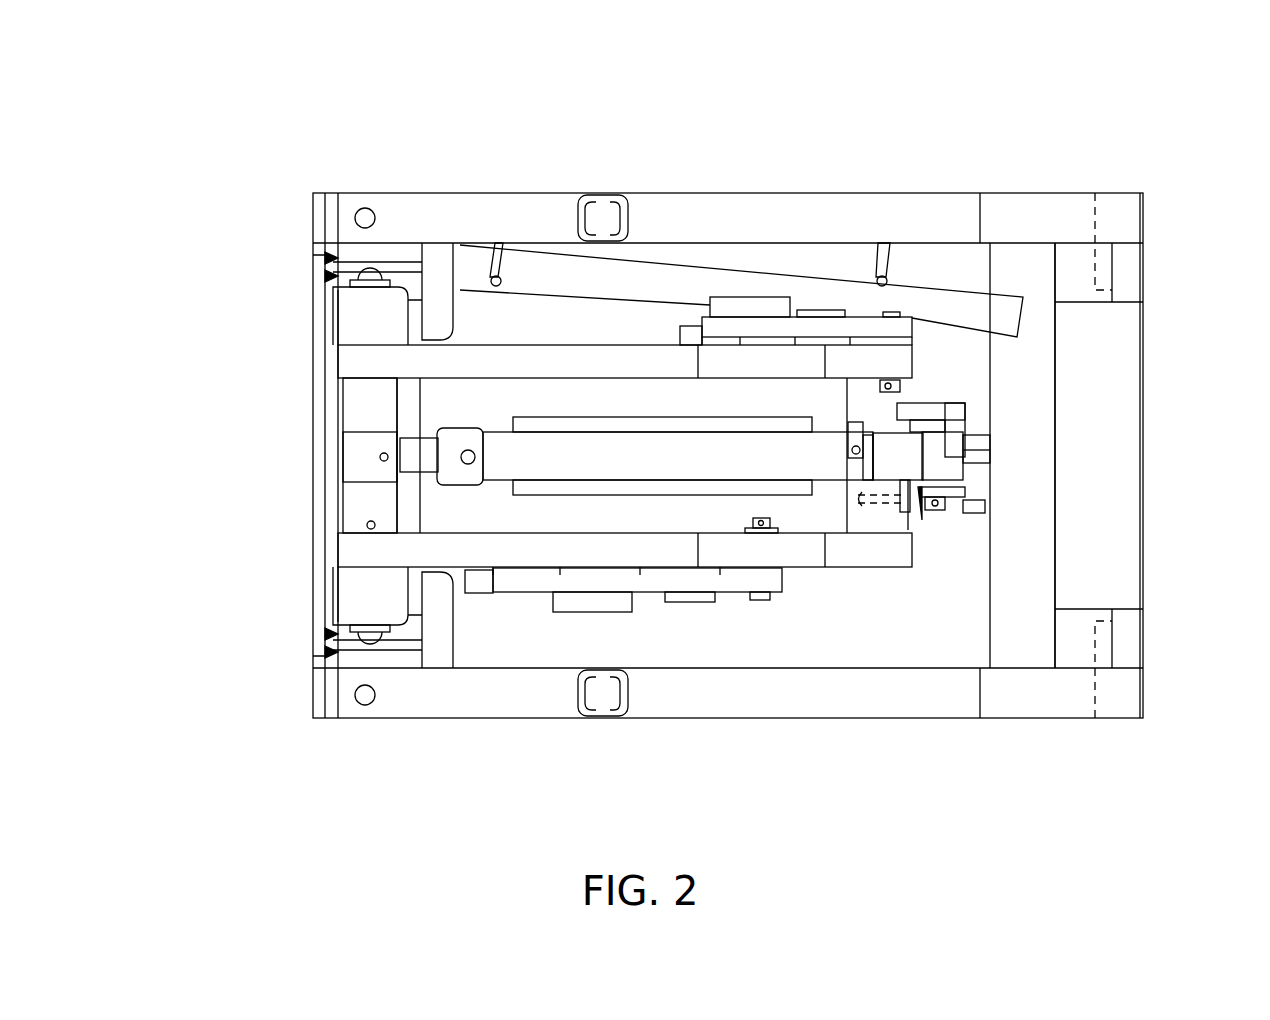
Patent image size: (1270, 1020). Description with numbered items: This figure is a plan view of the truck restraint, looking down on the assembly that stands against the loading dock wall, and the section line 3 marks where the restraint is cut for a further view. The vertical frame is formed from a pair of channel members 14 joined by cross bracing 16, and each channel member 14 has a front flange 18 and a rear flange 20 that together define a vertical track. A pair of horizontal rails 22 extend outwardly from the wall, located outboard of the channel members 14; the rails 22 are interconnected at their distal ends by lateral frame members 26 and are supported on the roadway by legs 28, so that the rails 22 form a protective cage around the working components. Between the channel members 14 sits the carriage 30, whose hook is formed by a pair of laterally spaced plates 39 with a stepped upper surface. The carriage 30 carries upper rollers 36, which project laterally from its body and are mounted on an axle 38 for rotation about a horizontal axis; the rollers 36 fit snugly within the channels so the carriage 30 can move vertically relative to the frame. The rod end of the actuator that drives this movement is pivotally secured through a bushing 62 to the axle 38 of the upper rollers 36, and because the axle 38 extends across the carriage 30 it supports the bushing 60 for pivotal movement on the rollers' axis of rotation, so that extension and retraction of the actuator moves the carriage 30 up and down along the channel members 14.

The section line 3- 3 is at (435, 865).
The channel members 14 is at (352, 265).
The cross bracing 16 is at (320, 497).
The front flange 18 is at (415, 300).
The rear flange 20 is at (330, 318).
The horizontal rails 22 is at (868, 215).
The lateral frame members 26 is at (1085, 420).
The legs 28 is at (603, 195).
The carriage 30 is at (325, 400).
The upper rollers 36 is at (397, 293).
The axle 38 is at (372, 272).
The laterally spaced plates 39 is at (478, 362).
The bushing 60 is at (355, 600).
The bushing 62 is at (355, 440).